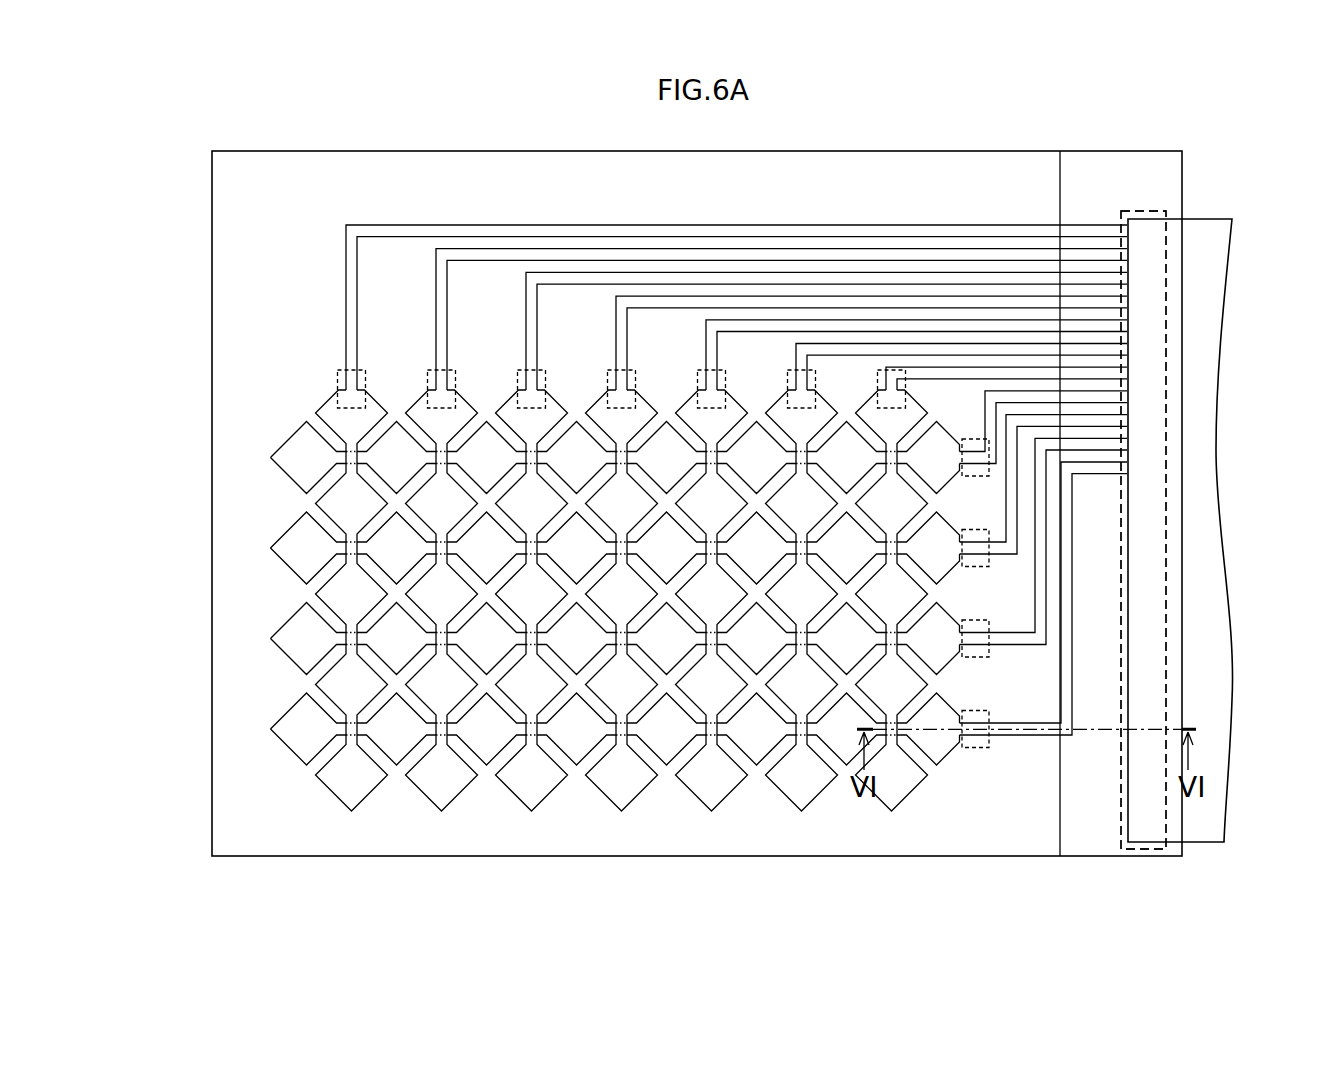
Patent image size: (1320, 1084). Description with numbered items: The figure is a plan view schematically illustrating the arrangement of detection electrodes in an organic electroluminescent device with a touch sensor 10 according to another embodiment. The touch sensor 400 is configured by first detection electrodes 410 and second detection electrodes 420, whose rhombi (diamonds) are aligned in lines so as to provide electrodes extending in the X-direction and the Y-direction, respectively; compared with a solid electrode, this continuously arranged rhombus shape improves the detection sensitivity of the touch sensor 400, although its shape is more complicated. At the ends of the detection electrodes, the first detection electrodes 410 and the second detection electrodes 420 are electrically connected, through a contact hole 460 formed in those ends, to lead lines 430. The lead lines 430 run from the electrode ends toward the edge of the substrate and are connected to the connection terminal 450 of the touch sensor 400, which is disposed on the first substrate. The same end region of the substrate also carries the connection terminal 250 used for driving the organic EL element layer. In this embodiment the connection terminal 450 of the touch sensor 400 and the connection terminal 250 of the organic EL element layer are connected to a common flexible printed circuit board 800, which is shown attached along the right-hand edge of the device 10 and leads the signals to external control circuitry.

The organic electroluminescent device with a touch sensor 10 is at (1218, 150).
The touch sensor 400 is at (523, 600).
The first detection electrodes 410 is at (333, 505).
The second detection electrodes 420 is at (290, 462).
The lead lines 430 is at (972, 230).
The contact hole 460 is at (990, 748).
The flexible printed circuit board 800 is at (1218, 760).
The connection terminal 250 is at (1147, 849).
The connection terminal 450 is at (1143, 530).